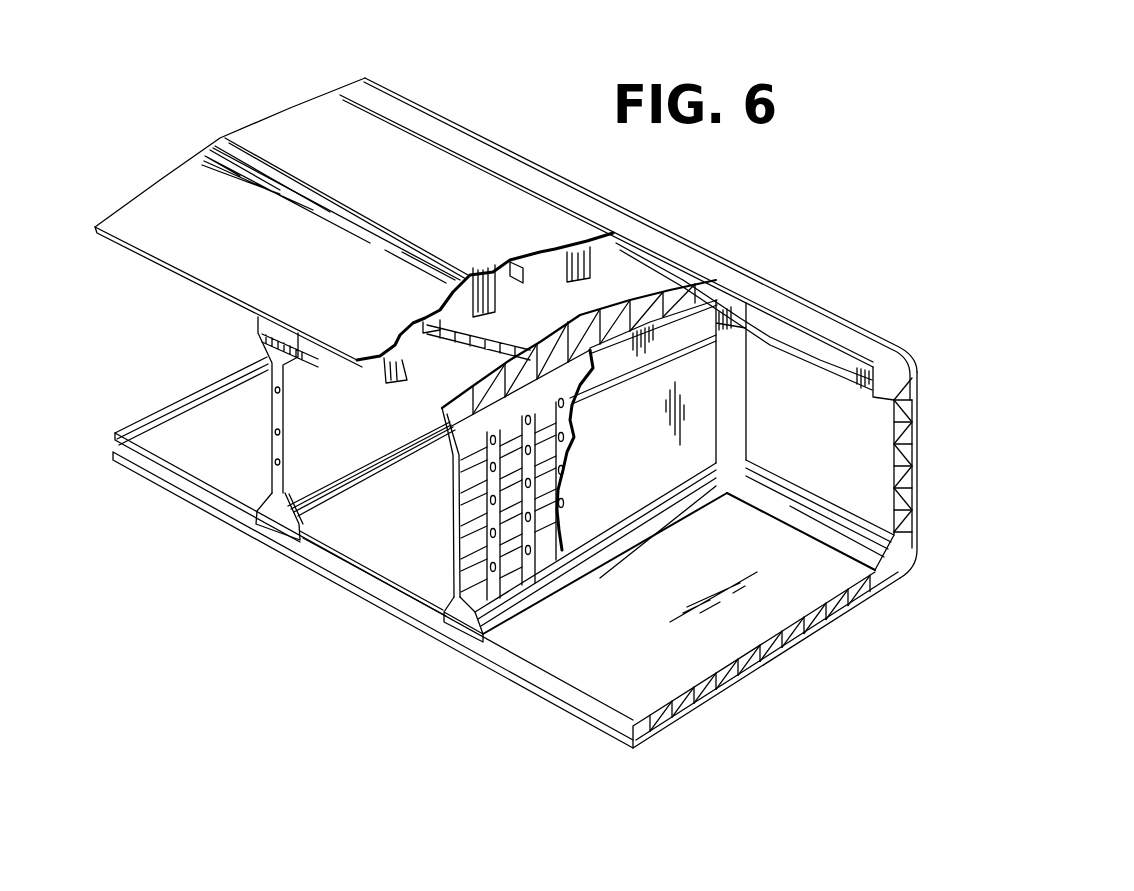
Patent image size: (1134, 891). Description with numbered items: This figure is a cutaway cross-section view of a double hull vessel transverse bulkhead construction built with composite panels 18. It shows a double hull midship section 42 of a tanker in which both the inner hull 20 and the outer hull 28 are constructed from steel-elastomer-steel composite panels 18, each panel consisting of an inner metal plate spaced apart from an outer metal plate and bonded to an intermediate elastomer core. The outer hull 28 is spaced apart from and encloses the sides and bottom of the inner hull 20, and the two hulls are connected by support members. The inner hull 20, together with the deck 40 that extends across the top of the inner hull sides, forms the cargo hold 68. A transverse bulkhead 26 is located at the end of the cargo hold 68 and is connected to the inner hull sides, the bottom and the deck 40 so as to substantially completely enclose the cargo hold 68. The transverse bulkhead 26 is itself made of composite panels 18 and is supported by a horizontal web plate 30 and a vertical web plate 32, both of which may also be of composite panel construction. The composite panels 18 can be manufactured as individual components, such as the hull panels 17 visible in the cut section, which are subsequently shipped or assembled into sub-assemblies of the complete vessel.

The hull panel 17 is at (780, 603).
The composite panel 18 is at (460, 528).
The inner hull 20 is at (373, 555).
The transverse bulkhead 26 is at (300, 440).
The outer hull 28 is at (373, 600).
The horizontal web plate 30 is at (578, 442).
The vertical web plate 32 is at (507, 557).
The deck 40 is at (417, 191).
The double hull midship section 42 is at (662, 220).
The cargo hold 68 is at (795, 397).